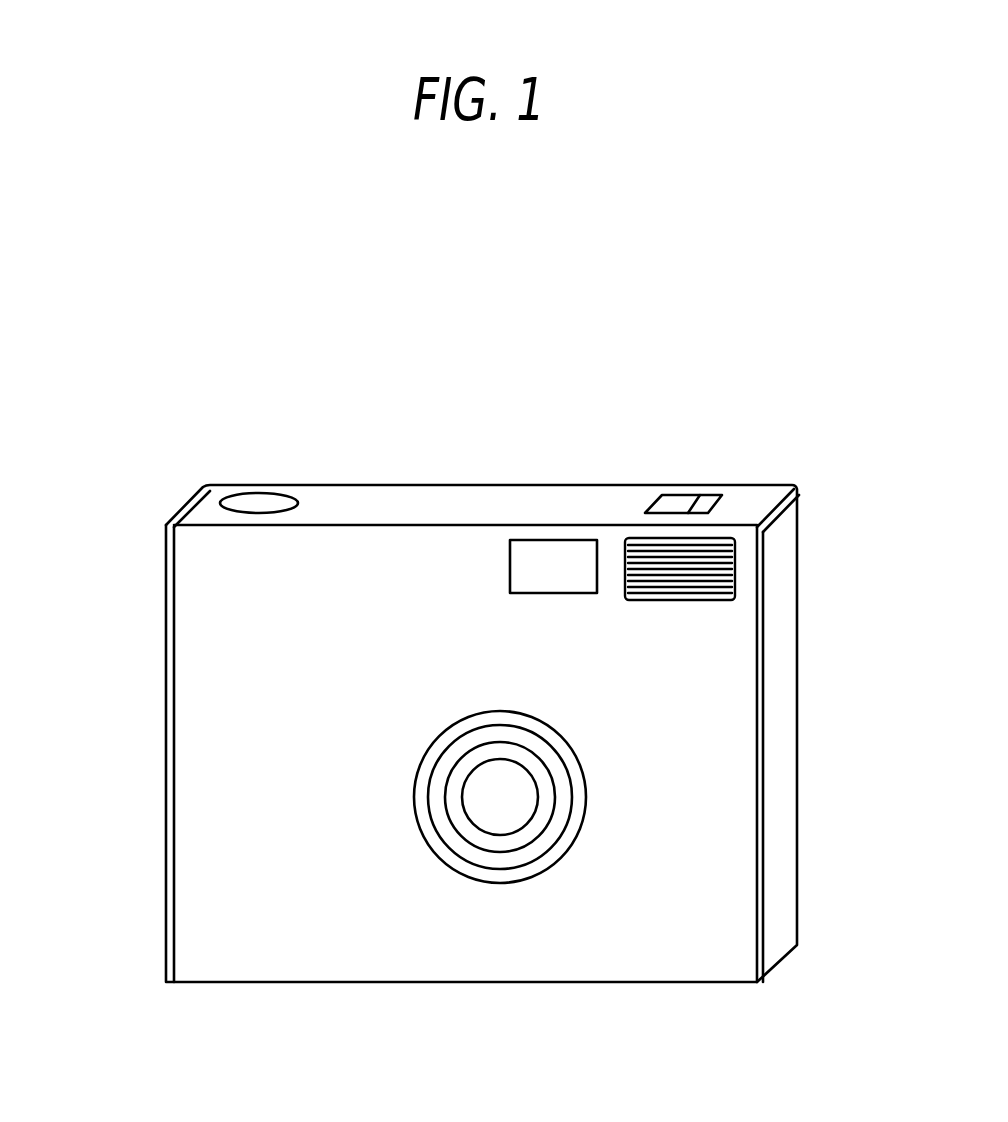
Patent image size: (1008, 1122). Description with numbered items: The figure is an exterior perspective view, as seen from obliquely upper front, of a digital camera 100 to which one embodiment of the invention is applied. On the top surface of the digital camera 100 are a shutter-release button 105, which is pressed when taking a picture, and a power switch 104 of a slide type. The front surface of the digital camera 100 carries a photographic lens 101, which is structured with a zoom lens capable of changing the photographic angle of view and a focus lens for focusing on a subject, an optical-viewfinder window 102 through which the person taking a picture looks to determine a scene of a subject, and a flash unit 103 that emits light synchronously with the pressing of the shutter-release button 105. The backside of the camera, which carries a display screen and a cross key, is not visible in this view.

The digital camera 100 is at (135, 418).
The photographic lens 101 is at (503, 795).
The optical-viewfinder window 102 is at (545, 562).
The flash unit 103 is at (650, 553).
The power switch 104 is at (673, 503).
The shutter-release button 105 is at (252, 508).